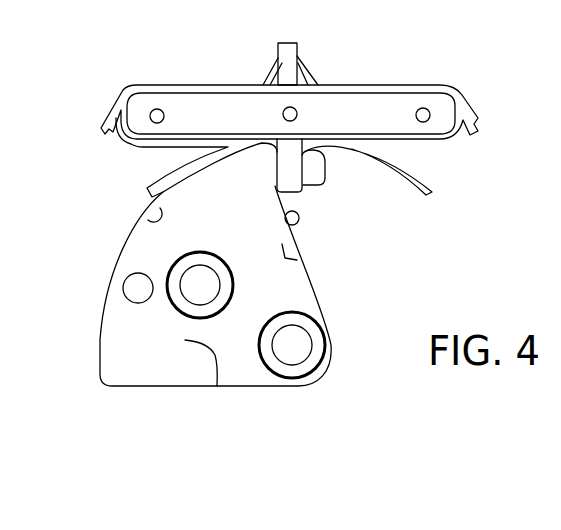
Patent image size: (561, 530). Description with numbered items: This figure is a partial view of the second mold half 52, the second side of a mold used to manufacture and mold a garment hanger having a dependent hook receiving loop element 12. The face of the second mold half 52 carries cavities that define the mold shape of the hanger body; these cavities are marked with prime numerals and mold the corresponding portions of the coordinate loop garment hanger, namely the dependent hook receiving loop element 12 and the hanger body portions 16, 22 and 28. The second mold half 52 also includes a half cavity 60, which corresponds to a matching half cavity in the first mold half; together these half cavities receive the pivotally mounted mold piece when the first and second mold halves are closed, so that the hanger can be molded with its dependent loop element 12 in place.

The dependent hook receiving loop element 12 is at (215, 262).
The hanger body portion 16 is at (246, 123).
The hanger body portion 22 is at (278, 45).
The hanger body portion 28 is at (158, 185).
The second mold half 52 is at (367, 216).
The half cavity 60 is at (148, 222).